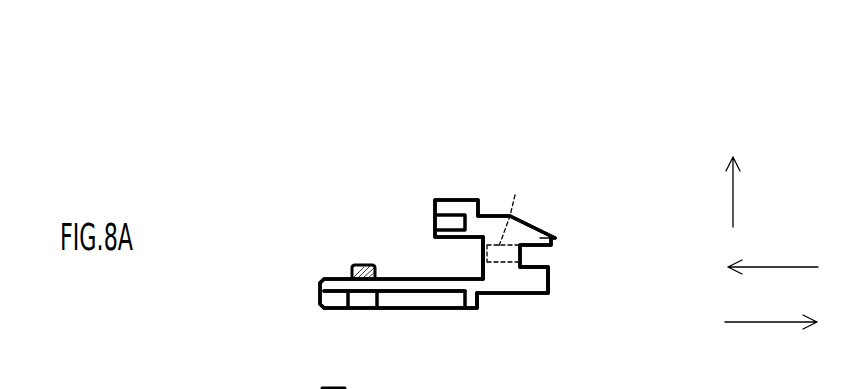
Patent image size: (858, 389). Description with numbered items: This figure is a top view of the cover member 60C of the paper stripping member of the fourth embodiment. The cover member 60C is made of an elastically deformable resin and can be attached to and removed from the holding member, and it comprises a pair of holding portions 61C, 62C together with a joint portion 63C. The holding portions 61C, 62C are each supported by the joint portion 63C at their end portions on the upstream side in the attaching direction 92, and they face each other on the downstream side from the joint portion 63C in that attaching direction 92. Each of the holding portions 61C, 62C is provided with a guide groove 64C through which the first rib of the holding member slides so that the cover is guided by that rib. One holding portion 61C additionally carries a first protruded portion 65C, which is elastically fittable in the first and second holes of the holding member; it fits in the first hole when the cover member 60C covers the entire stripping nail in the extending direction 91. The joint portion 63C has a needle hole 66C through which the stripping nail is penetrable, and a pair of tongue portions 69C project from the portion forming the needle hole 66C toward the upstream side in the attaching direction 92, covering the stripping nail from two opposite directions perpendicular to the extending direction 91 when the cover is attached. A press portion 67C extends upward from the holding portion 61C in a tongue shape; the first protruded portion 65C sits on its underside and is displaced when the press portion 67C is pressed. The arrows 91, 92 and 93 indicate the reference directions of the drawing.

The cover member 60C is at (462, 200).
The holding portion 61C is at (432, 304).
The holding portion 62C is at (437, 200).
The joint portion 63C is at (503, 297).
The guide groove 64C is at (403, 282).
The first protruded portion 65C is at (356, 262).
The needle hole 66C is at (515, 195).
The press portion 67C is at (365, 381).
The tongue portions 69C is at (554, 240).
The extending direction 91 is at (771, 311).
The attaching direction 92 is at (773, 256).
The third direction 93 is at (745, 192).